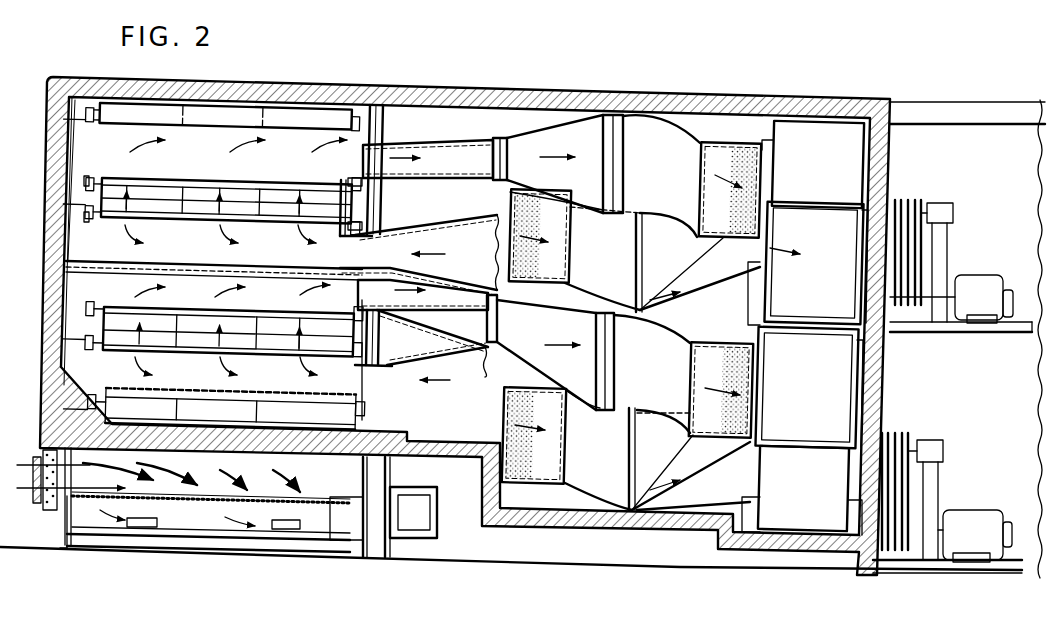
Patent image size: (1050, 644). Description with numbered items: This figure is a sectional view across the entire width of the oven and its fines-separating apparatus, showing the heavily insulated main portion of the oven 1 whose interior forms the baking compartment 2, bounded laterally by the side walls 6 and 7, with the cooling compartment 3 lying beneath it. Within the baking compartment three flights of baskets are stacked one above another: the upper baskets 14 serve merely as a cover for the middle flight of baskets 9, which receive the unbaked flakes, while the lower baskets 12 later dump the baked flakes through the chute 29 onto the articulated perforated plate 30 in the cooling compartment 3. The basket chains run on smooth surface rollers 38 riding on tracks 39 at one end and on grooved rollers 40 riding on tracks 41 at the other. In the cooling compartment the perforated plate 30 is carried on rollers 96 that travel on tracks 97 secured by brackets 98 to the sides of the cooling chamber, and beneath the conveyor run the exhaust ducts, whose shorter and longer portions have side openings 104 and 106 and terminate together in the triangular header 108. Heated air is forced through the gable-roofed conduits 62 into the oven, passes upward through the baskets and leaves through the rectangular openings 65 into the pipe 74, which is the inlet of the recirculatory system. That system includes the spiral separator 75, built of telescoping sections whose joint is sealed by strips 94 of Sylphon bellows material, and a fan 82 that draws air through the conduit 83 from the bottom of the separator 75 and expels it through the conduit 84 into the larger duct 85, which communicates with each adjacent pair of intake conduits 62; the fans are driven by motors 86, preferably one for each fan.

The top of the oven 1 is at (402, 80).
The baking compartment 2 is at (87, 152).
The cooling compartment 3 is at (165, 478).
The side wall 6 is at (50, 187).
The side wall 7 is at (384, 200).
The baskets 9 is at (262, 222).
The baskets 12 is at (268, 340).
The baskets 14 is at (275, 185).
The chute 29 is at (250, 479).
The articulated perforated plate 30 is at (223, 498).
The smooth surface rollers 38 is at (352, 178).
The tracks 39 is at (350, 238).
The grooved rollers 40 is at (92, 177).
The tracks 41 is at (88, 224).
The gable-roofed conduits 62 is at (395, 259).
The rectangular openings 65 is at (426, 159).
The pipe 74 is at (480, 145).
The spiral separator 75 is at (700, 190).
The fan 82 is at (845, 170).
The conduit 83 is at (775, 143).
The conduit 84 is at (830, 292).
The duct 85 is at (457, 223).
The motors 86 is at (1005, 262).
The strips of Sylphon or bellows material 94 is at (623, 153).
The rollers 96 is at (78, 500).
The tracks 97 is at (75, 547).
The brackets 98 is at (60, 537).
The opening 104 is at (290, 526).
The opening 106 is at (145, 520).
The header 108 is at (417, 488).